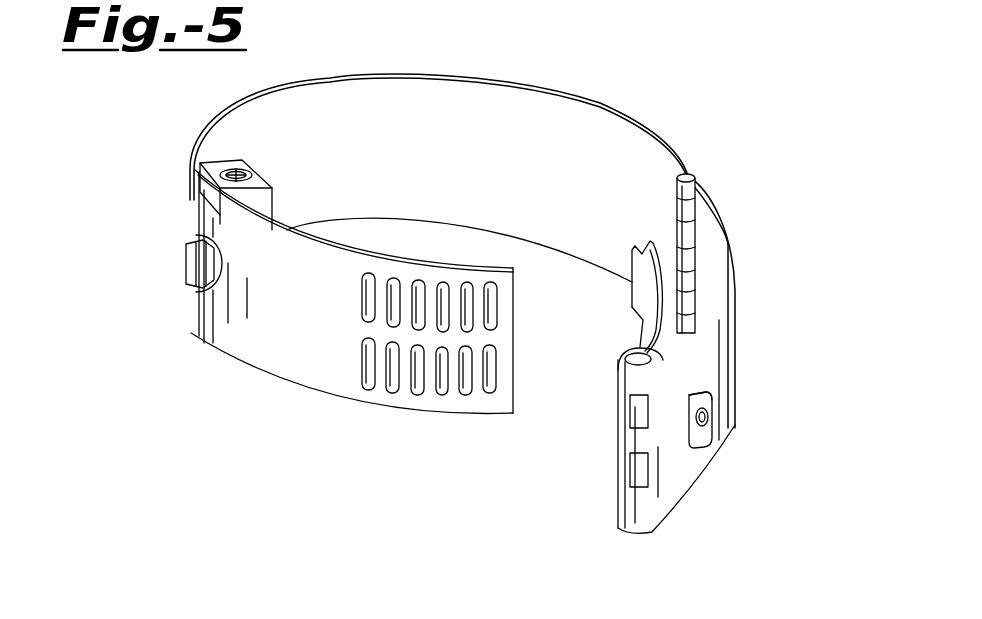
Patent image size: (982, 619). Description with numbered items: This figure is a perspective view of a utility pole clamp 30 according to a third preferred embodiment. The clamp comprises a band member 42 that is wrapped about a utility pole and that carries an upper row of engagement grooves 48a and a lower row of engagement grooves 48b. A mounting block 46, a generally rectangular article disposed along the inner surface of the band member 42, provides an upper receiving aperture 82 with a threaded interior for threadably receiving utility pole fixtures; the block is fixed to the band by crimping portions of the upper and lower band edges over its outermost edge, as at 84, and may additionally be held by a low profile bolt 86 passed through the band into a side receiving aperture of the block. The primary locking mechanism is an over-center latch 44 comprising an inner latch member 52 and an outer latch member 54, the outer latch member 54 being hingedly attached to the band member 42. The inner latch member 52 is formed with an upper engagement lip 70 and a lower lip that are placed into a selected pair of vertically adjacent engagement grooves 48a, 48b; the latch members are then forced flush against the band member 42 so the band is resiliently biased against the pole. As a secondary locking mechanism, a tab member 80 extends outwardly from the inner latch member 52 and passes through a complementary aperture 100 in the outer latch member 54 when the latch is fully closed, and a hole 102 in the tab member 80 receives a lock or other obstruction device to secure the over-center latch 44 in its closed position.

The utility pole clamp 30 is at (663, 120).
The band member 42 is at (318, 332).
The over-center latch 44 is at (736, 338).
The mounting block 46 is at (252, 162).
The upper row of engagement grooves 48a is at (394, 276).
The lower row of engagement grooves 48b is at (368, 392).
The inner latch member 52 is at (660, 352).
The outer latch member 54 is at (733, 300).
The upper engagement lip 70 is at (648, 290).
The tab member 80 is at (712, 422).
The upper receiving aperture 82 is at (255, 164).
The crimped portion 84 is at (197, 168).
The low profile bolt 86 is at (186, 258).
The complementary aperture 100 is at (700, 391).
The hole 102 is at (704, 428).